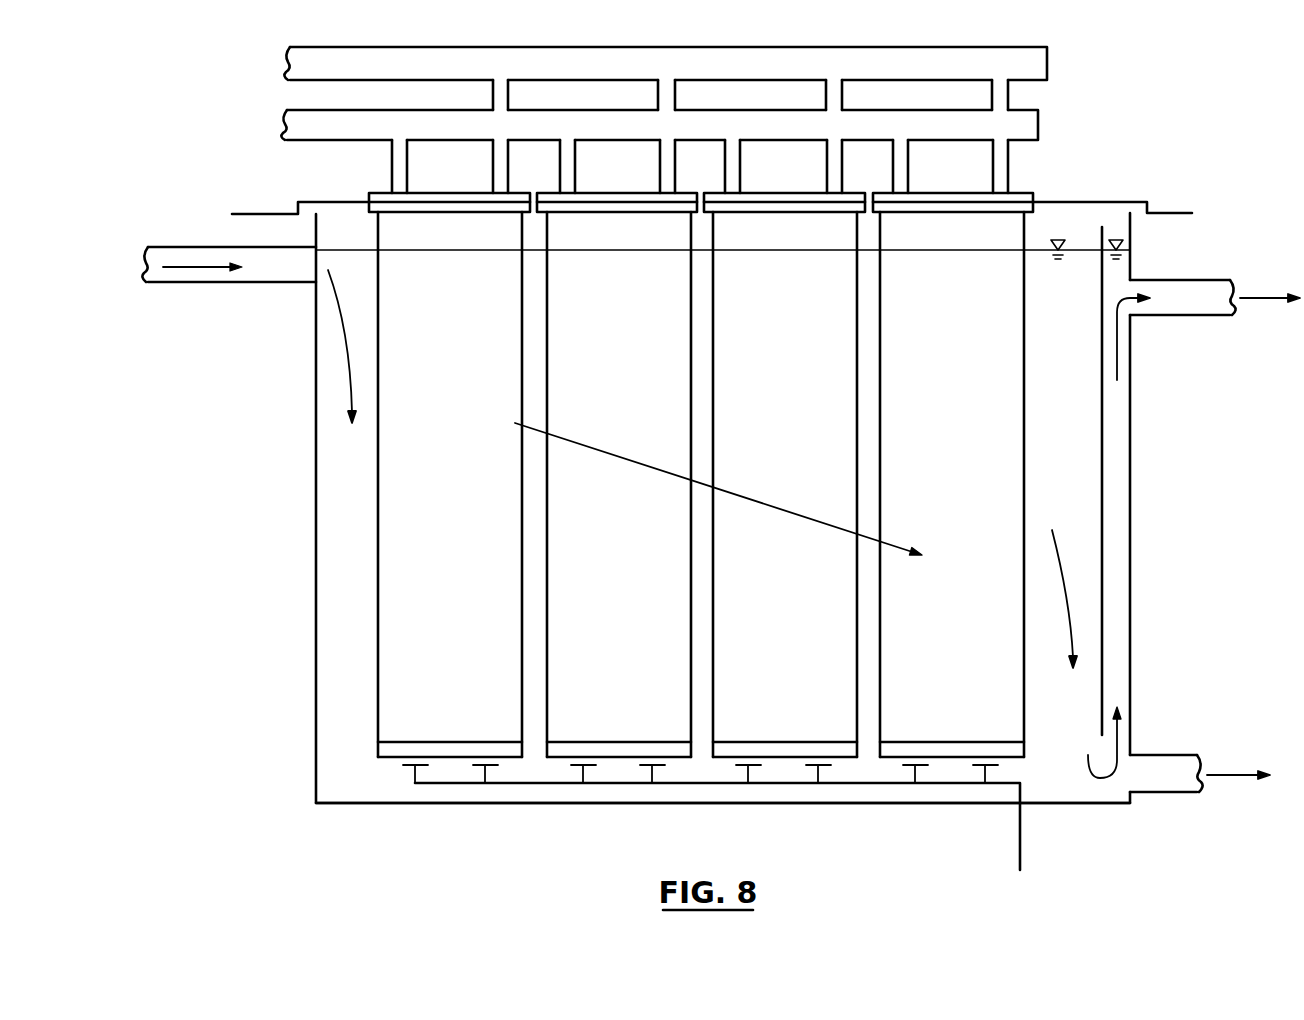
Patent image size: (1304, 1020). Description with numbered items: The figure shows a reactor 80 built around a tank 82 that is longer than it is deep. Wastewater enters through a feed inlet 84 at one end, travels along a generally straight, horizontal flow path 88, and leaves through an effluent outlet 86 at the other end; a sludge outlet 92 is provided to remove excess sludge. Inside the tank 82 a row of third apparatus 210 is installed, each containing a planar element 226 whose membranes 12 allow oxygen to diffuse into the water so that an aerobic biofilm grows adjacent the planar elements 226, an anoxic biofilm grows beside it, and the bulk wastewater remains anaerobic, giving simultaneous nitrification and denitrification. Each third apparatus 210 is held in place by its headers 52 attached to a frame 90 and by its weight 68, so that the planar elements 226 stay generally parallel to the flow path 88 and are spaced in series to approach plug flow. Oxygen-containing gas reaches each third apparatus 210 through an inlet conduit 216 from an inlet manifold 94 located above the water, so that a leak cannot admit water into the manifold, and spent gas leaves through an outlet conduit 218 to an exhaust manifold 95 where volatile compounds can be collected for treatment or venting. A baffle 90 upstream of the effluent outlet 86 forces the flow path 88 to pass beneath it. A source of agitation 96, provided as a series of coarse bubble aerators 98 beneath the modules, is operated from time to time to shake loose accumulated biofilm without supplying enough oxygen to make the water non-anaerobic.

The membranes 12 is at (436, 500).
The headers 52 is at (369, 193).
The weight 68 is at (385, 748).
The reactor 80 is at (255, 694).
The tank 82 is at (340, 805).
The feed inlet 84 is at (191, 285).
The effluent outlet 86 is at (1206, 318).
The flow path 88 is at (727, 490).
The baffle 90 is at (1069, 200).
The sludge outlet 92 is at (1175, 795).
The inlet manifold 94 is at (1040, 123).
The exhaust manifold 95 is at (1048, 60).
The source of agitation 96 is at (1022, 822).
The coarse bubble aerators 98 is at (425, 768).
The third apparatus 210 is at (426, 595).
The inlet conduit 216 is at (408, 162).
The outlet conduit 218 is at (509, 90).
The planar elements 226 is at (426, 403).